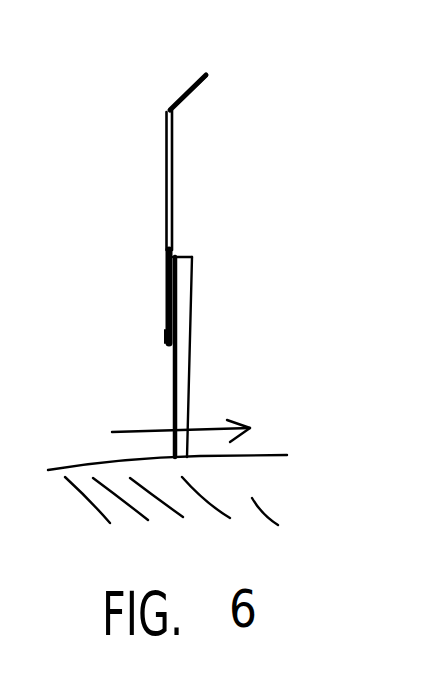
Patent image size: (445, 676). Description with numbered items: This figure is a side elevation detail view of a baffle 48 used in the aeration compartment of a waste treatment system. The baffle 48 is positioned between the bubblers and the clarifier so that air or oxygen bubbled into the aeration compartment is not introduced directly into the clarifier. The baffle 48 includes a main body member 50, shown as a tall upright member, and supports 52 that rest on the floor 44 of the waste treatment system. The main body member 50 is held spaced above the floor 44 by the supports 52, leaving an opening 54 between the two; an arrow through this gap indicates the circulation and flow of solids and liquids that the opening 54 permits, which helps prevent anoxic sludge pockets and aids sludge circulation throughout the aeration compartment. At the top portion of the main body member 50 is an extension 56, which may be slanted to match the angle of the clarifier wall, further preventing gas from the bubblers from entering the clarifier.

The floor 44 is at (270, 457).
The baffle 48 is at (245, 164).
The main body member 50 is at (167, 225).
The supports 52 is at (180, 400).
The opening 54 is at (146, 427).
The extension 56 is at (200, 88).